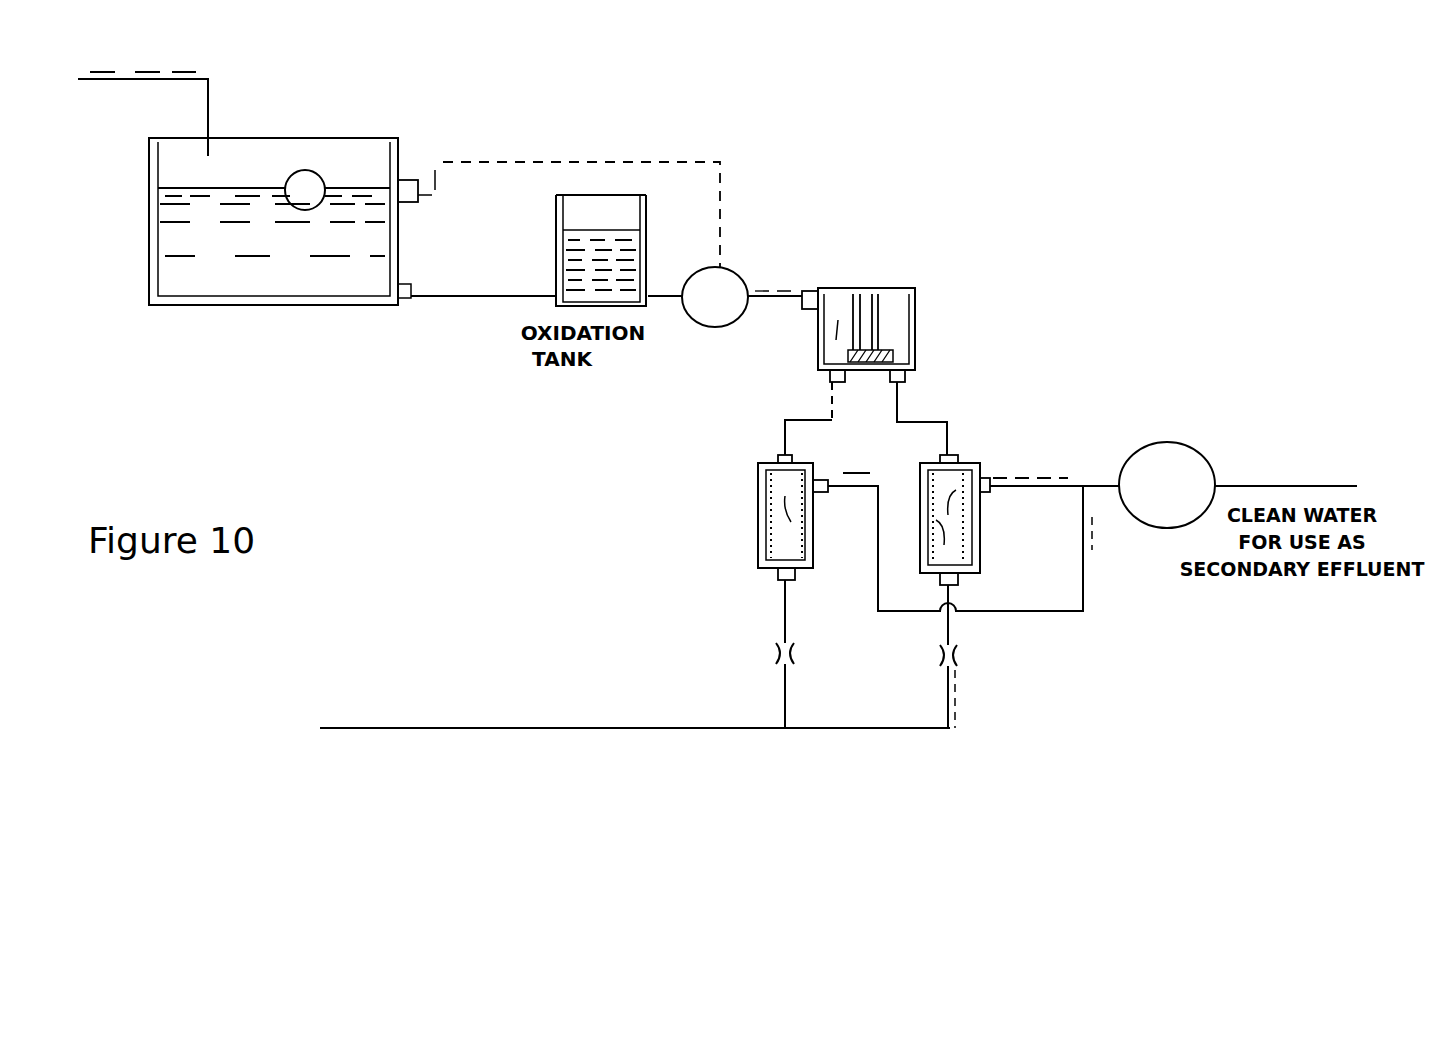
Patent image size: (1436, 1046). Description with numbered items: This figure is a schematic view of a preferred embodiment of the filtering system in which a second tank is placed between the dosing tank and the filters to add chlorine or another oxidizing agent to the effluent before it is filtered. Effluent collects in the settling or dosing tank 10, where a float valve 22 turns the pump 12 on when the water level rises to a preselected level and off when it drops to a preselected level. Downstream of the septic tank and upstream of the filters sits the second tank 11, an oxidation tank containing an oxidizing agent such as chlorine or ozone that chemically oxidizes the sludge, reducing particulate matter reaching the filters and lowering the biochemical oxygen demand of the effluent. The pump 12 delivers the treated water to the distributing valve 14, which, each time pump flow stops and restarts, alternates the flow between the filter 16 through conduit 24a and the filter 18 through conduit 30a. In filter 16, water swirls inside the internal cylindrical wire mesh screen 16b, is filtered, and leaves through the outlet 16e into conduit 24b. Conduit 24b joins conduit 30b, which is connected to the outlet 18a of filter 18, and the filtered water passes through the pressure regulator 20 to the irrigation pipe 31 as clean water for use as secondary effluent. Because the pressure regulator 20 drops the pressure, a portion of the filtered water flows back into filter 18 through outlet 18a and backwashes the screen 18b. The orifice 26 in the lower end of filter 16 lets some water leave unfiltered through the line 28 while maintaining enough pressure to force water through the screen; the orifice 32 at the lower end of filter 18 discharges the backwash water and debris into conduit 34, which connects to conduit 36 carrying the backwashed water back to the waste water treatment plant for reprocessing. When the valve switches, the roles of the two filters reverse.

The settling or dosing tank 10 is at (400, 160).
The float valve 22 is at (413, 182).
The second tank 11 is at (647, 208).
The pump 12 is at (735, 277).
The distributing valve 14 is at (915, 331).
The conduit 24a is at (803, 420).
The conduit 30a is at (923, 421).
The filter 16 is at (753, 518).
The internal cylindrical wire mesh screen 16b is at (758, 496).
The outlet 16e is at (822, 471).
The filter 18 is at (983, 535).
The outlet 18a is at (983, 472).
The screen 18b is at (980, 550).
The conduit 24b is at (875, 579).
The conduit 30b is at (1073, 484).
The pressure regulator 20 is at (1172, 443).
The irrigation pipe 31 is at (1300, 485).
The orifice 26 is at (795, 652).
The line 28 is at (790, 698).
The orifice 32 is at (957, 660).
The conduit 34 is at (960, 702).
The conduit 36 is at (858, 730).